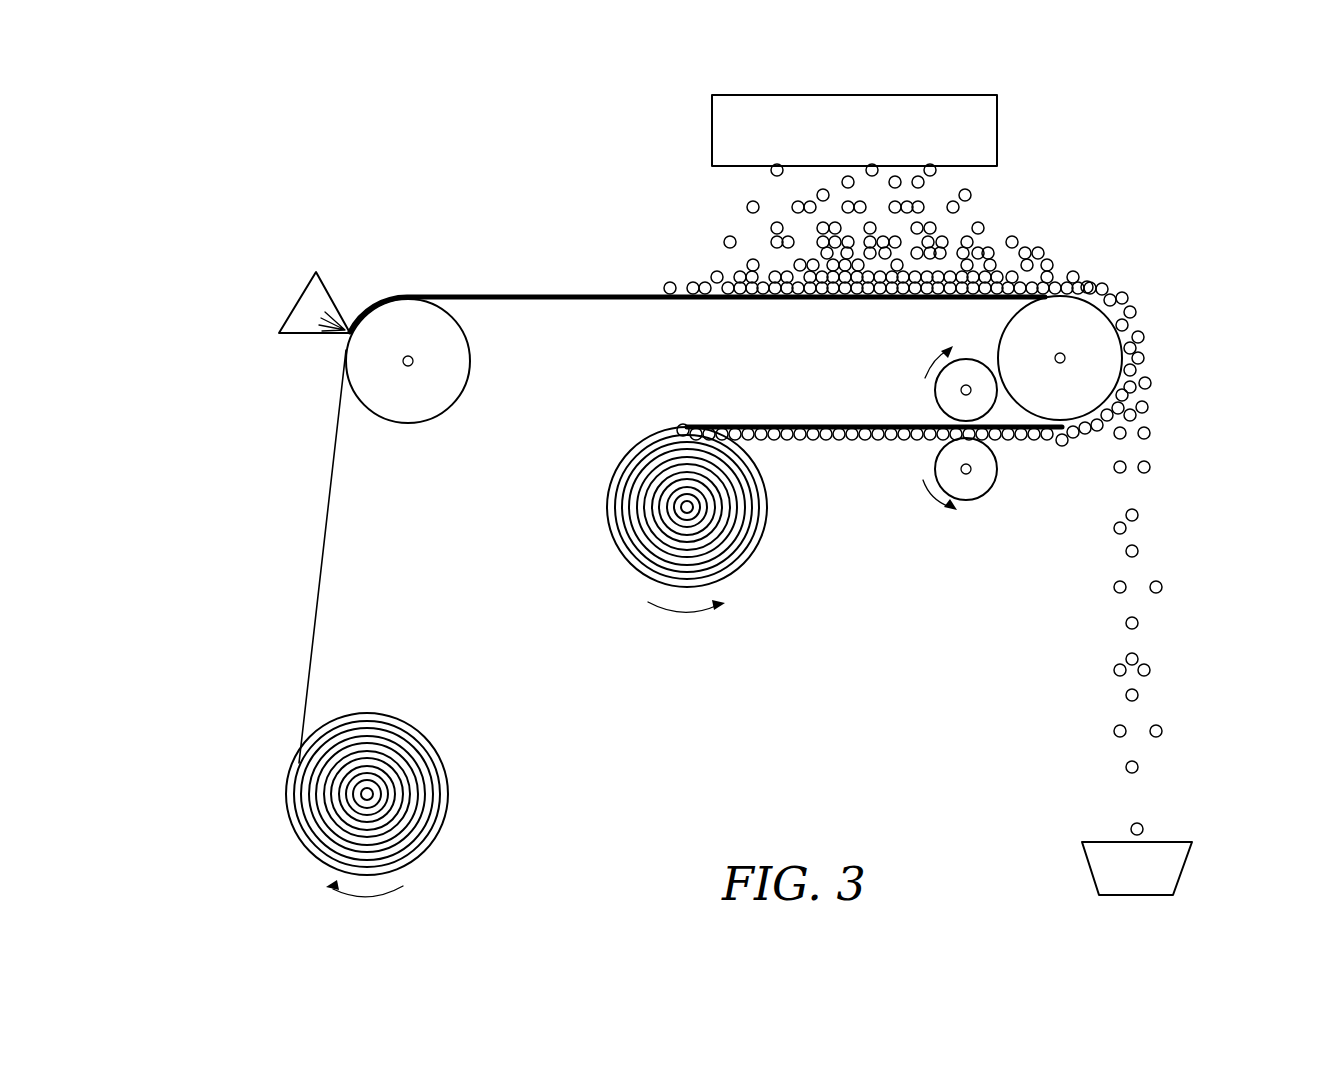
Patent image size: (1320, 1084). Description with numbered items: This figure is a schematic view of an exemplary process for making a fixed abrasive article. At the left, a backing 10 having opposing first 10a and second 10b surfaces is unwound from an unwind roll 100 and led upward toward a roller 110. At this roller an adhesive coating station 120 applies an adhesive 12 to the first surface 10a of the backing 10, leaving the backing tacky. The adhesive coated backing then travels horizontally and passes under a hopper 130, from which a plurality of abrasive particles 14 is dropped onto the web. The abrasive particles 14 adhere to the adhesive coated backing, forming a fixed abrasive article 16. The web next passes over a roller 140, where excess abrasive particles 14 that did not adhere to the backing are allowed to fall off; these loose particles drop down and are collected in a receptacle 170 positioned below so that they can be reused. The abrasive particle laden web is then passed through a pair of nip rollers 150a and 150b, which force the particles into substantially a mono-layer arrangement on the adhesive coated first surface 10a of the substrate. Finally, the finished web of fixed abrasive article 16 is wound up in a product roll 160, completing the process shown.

The backing 10 is at (633, 486).
The first surface 10a is at (318, 583).
The second surface 10b is at (682, 429).
The adhesive 12 is at (500, 292).
The abrasive particles 14 is at (972, 212).
The fixed abrasive article 16 is at (799, 448).
The unwind roll 100 is at (447, 812).
The roller 110 is at (406, 436).
The adhesive coating station 120 is at (284, 288).
The hopper 130 is at (997, 122).
The roller 140 is at (1092, 330).
The nip roller 150a is at (935, 398).
The nip roller 150b is at (935, 462).
The product roll 160 is at (745, 572).
The receptacle 170 is at (1180, 868).